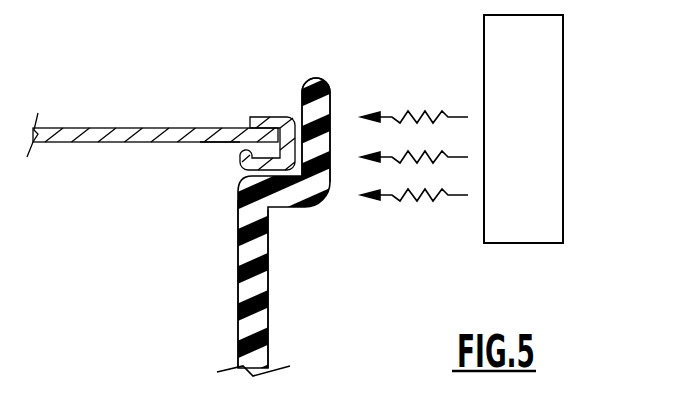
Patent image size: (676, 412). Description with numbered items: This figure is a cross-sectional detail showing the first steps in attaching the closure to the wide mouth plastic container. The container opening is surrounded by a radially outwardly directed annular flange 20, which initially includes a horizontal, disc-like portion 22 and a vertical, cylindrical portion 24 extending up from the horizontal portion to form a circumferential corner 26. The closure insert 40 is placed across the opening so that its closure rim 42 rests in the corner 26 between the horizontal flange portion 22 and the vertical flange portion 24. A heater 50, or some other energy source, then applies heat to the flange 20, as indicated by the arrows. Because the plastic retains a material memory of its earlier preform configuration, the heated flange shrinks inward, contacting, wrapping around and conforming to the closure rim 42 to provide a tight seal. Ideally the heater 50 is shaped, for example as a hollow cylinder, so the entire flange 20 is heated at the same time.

The annular flange 20 is at (360, 242).
The horizontal flange portion 22 is at (293, 208).
The vertical flange portion 24 is at (332, 102).
The circumferential corner 26 is at (296, 170).
The closure insert 40 is at (128, 128).
The closure rim 42 is at (212, 172).
The heater 50 is at (532, 121).